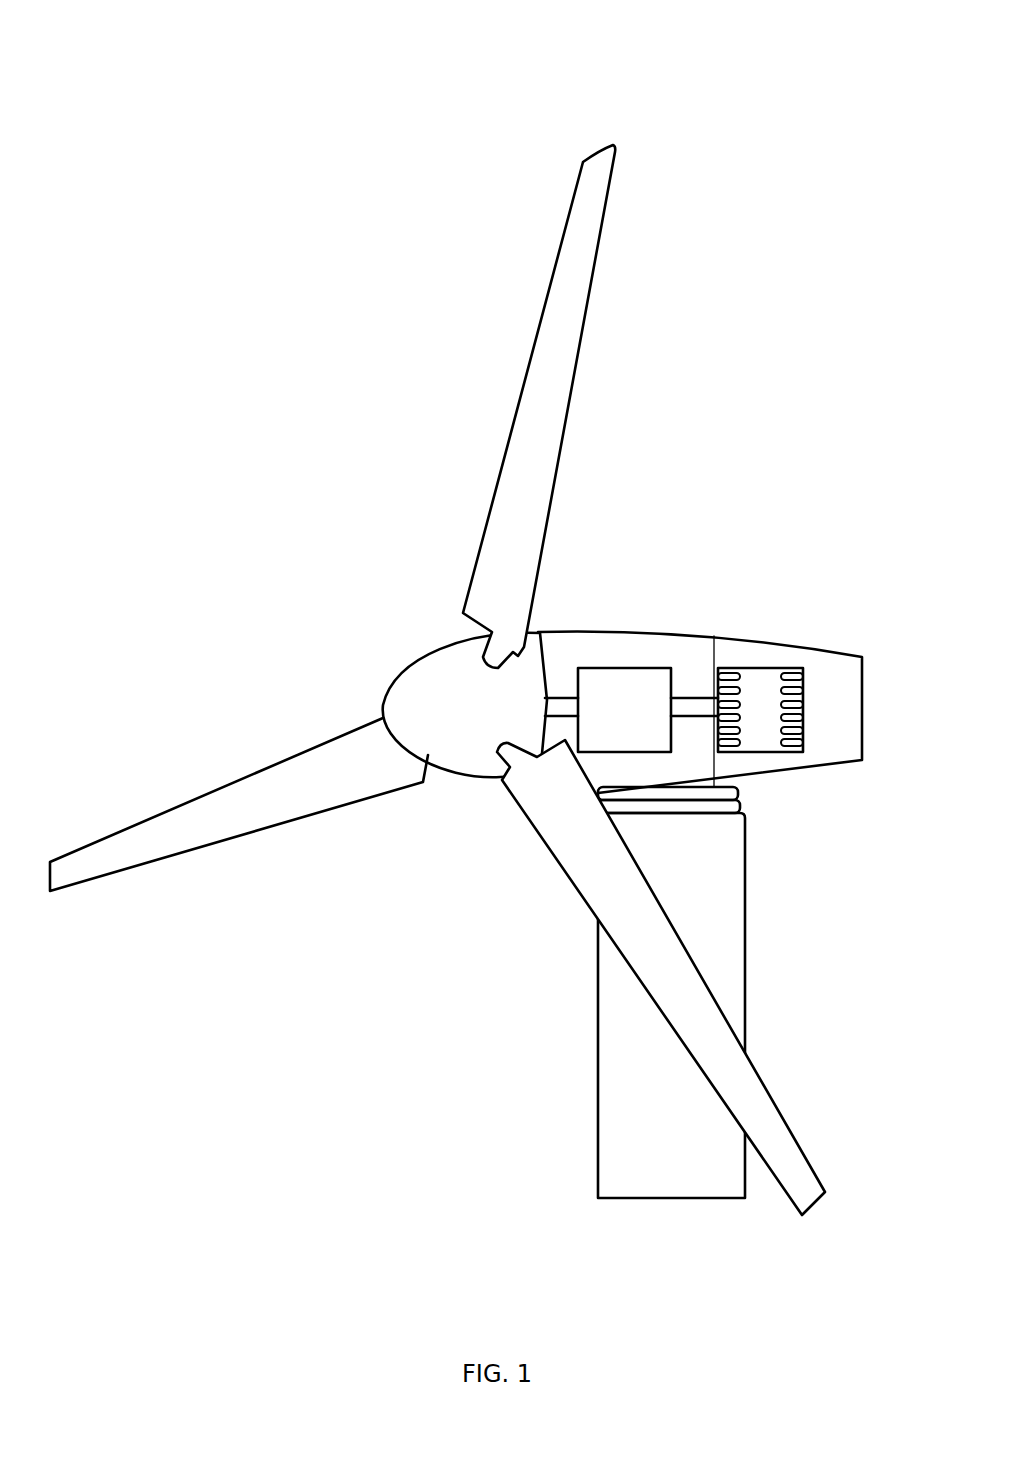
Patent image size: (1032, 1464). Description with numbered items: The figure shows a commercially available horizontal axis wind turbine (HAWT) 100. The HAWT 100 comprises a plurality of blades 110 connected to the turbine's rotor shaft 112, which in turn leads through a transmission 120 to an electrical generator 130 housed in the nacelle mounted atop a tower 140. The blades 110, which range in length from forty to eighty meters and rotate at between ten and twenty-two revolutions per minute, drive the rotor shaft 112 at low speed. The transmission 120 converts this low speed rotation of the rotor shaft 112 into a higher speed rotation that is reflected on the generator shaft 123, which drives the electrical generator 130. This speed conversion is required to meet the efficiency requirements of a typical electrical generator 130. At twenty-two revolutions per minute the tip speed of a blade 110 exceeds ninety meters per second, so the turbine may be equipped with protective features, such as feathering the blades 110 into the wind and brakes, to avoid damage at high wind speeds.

The horizontal axis wind turbine 100 is at (833, 86).
The blades 110 is at (508, 452).
The rotor shaft 112 is at (562, 697).
The transmission 120 is at (630, 670).
The generator shaft 123 is at (692, 697).
The electrical generator 130 is at (767, 668).
The tower 140 is at (745, 1018).